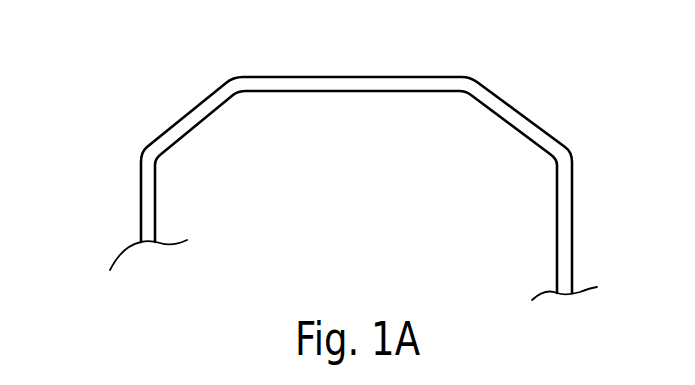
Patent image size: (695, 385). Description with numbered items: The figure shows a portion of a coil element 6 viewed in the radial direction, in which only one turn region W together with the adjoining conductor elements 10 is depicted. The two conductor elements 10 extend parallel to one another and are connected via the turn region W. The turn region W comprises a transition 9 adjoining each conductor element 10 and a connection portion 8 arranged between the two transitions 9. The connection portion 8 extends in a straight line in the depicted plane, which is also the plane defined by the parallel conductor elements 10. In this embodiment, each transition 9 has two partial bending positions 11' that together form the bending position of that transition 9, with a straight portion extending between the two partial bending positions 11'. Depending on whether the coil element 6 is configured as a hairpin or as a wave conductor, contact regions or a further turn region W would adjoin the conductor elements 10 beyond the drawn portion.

The coil element 6 is at (118, 129).
The turn region W is at (197, 84).
The connection portion 8 is at (366, 88).
The transition 9 is at (180, 124).
The partial bending position 11' is at (348, 97).
The conductor element 10 is at (148, 205).